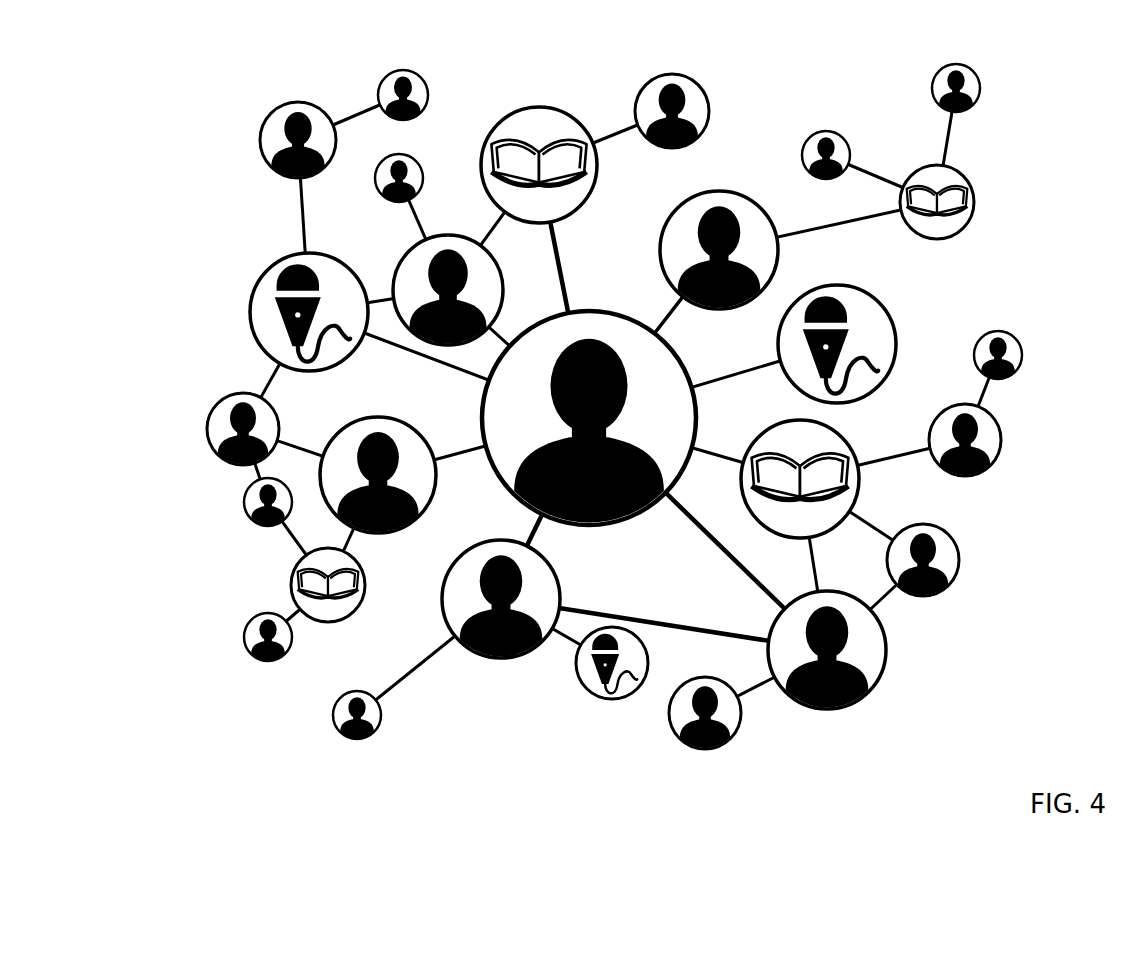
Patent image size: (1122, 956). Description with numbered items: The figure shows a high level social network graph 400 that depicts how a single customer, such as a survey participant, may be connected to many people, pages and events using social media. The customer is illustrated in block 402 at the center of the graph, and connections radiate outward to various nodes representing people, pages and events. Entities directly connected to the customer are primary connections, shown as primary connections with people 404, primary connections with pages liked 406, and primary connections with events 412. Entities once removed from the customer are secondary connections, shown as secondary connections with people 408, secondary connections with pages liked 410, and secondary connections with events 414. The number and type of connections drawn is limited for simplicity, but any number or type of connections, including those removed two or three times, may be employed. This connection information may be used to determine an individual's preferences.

The high level social network graph 400 is at (606, 412).
The customer block 402 is at (598, 306).
The primary connections with people 404 is at (479, 655).
The primary connections with pages liked 406 is at (502, 110).
The secondary connections with people 408 is at (287, 100).
The secondary connections with pages liked 410 is at (978, 196).
The primary connections with events 412 is at (249, 334).
The secondary connections with events 414 is at (610, 703).